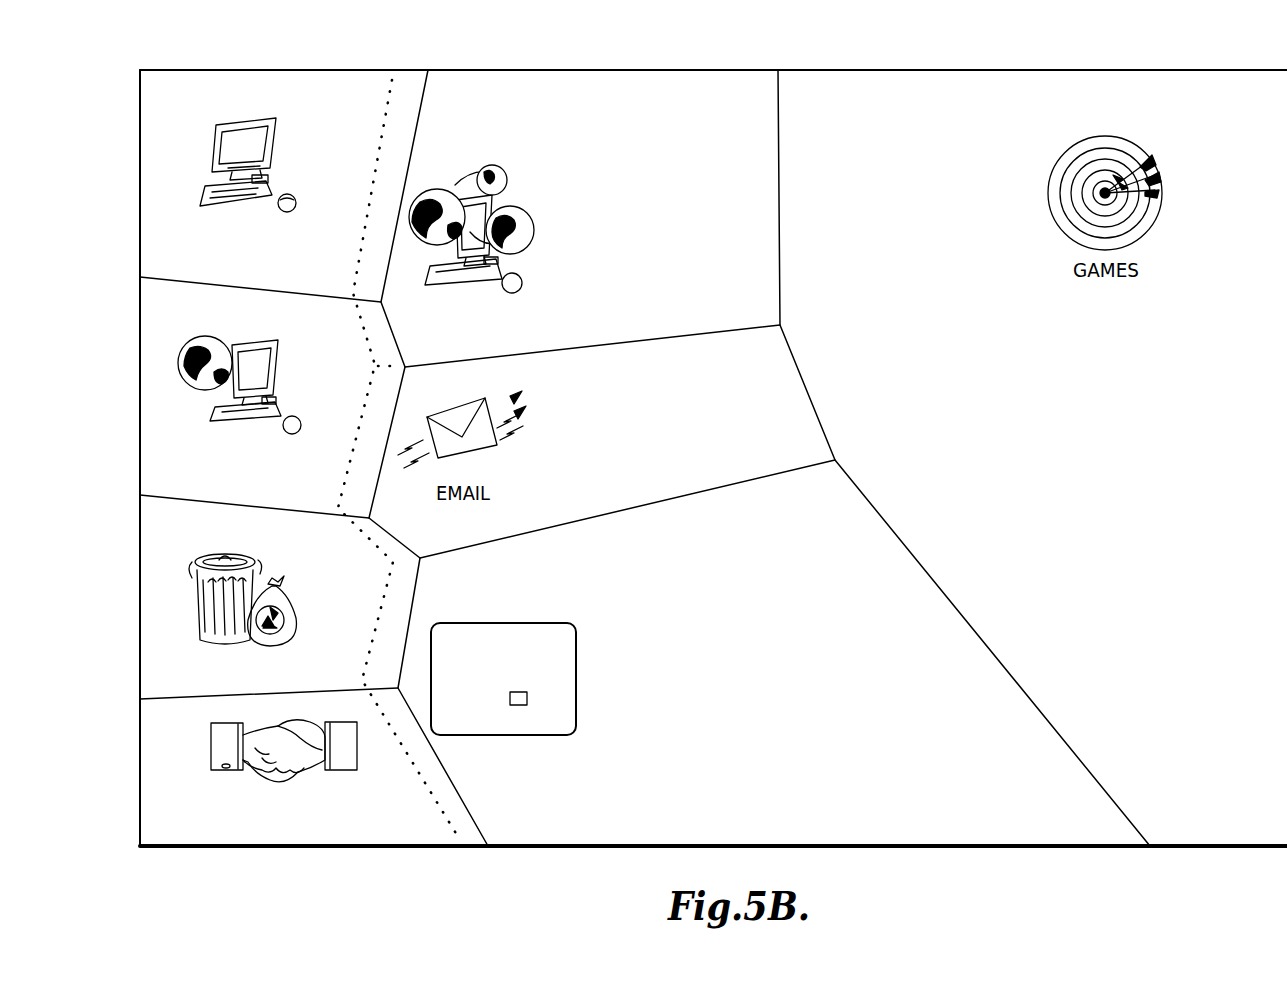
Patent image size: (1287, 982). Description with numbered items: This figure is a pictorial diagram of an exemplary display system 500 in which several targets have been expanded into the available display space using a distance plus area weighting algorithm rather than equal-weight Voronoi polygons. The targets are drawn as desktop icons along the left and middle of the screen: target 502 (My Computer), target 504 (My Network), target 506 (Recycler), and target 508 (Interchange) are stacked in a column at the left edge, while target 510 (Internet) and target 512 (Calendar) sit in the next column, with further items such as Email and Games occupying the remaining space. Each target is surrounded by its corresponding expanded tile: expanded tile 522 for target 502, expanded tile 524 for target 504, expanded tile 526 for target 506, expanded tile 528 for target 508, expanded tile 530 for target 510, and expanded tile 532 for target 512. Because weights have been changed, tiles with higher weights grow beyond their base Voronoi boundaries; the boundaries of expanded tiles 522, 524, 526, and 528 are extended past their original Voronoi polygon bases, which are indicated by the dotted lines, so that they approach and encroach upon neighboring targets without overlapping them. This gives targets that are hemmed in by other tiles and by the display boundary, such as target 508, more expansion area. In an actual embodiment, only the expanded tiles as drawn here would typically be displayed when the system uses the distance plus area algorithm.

The display system 500 is at (1082, 70).
The target 502 is at (213, 155).
The target 504 is at (197, 375).
The target 506 is at (198, 590).
The target 508 is at (211, 758).
The target 510 is at (487, 162).
The target 512 is at (540, 770).
The expanded tile 522 is at (172, 105).
The expanded tile 524 is at (172, 328).
The expanded tile 526 is at (172, 550).
The expanded tile 528 is at (178, 738).
The expanded tile 530 is at (566, 88).
The expanded tile 532 is at (631, 825).